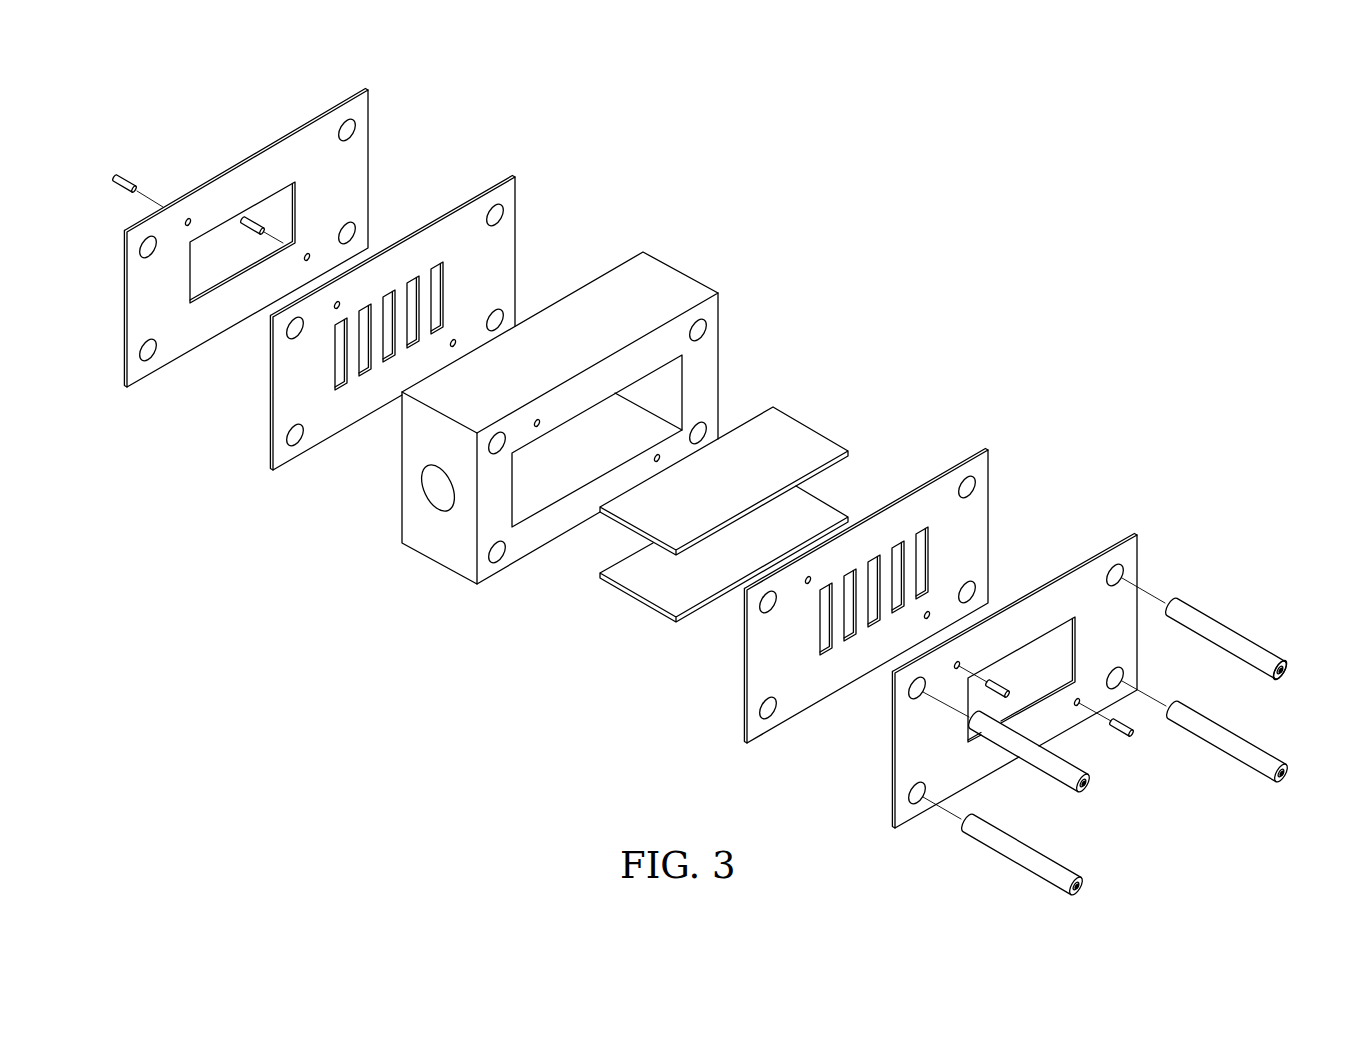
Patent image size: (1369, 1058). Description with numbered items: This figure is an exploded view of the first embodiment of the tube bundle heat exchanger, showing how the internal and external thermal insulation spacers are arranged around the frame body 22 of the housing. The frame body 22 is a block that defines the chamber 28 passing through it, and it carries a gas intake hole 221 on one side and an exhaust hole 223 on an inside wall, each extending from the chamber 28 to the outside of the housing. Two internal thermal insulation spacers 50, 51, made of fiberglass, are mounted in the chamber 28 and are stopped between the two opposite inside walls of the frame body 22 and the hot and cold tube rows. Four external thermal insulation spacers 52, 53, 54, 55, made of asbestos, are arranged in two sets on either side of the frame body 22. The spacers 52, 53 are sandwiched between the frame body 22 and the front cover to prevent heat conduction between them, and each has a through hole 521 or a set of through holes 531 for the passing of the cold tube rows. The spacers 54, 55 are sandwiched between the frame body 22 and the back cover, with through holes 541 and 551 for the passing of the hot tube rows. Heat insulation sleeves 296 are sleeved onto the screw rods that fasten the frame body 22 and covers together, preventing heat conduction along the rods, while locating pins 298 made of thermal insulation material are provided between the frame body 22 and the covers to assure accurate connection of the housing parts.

The frame body 22 is at (553, 410).
The gas intake hole 221 is at (435, 491).
The exhaust hole 223 is at (659, 381).
The chamber 28 is at (524, 505).
The internal thermal insulation spacer 50 is at (802, 438).
The internal thermal insulation spacer 51 is at (665, 592).
The external thermal insulation spacer 52 is at (1041, 657).
The through hole 521 is at (1072, 635).
The external thermal insulation spacer 53 is at (866, 590).
The through hole 531 is at (852, 642).
The external thermal insulation spacer 54 is at (392, 307).
The through hole 541 is at (435, 267).
The external thermal insulation spacer 55 is at (214, 231).
The through hole 551 is at (200, 296).
The heat insulation sleeve 296 is at (1124, 725).
The locating pin 298 is at (119, 177).